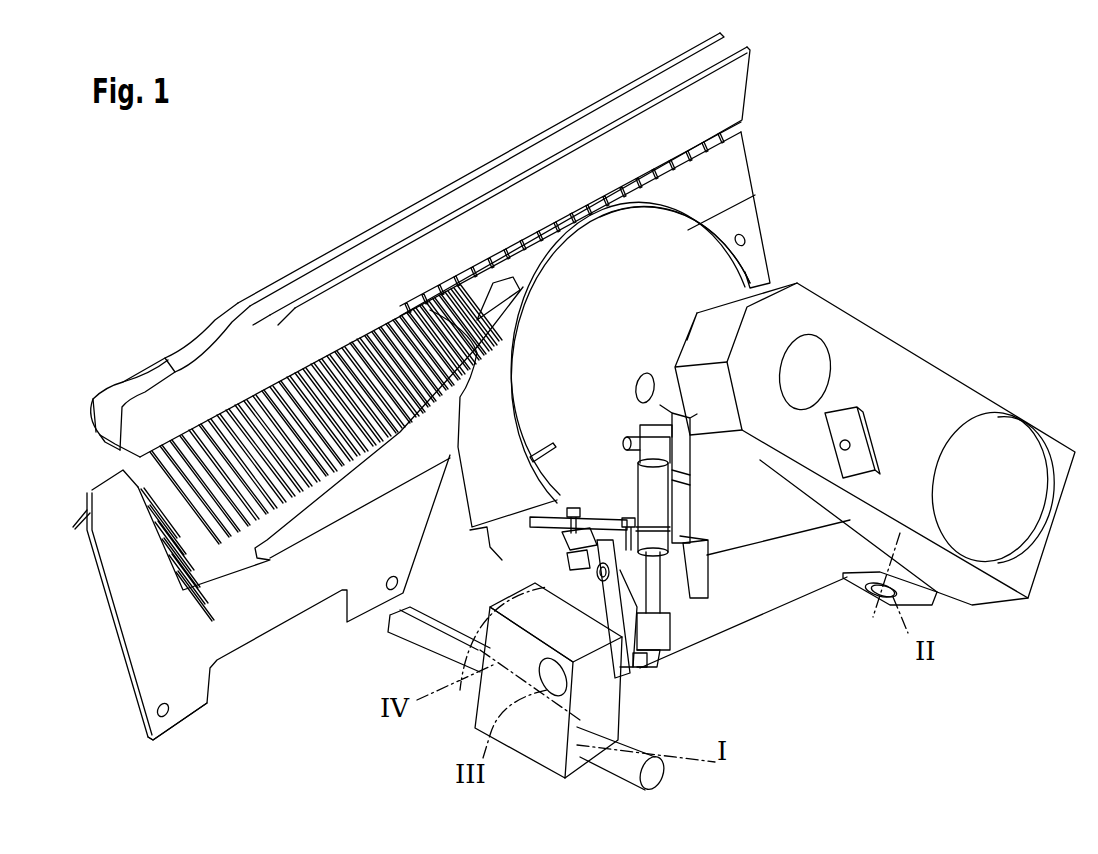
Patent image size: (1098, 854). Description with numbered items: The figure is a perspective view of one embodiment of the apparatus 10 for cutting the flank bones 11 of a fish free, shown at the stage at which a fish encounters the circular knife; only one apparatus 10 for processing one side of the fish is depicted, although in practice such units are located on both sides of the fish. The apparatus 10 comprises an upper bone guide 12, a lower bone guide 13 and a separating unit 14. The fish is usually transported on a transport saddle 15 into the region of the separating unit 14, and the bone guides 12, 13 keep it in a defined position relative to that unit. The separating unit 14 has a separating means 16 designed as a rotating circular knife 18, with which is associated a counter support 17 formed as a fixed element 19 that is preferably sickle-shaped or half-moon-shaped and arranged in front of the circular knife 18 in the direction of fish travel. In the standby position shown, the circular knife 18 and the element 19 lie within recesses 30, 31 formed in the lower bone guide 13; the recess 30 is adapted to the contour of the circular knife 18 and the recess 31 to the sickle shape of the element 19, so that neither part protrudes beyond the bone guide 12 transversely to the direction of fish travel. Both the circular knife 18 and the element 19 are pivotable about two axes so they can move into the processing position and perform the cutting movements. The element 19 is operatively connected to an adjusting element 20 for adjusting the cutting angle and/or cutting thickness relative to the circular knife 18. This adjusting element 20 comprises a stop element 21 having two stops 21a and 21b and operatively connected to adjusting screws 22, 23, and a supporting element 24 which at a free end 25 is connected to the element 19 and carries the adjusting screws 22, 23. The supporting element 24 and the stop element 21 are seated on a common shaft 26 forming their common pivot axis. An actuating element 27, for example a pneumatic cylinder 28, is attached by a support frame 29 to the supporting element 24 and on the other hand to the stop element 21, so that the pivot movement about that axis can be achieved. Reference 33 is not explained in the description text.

The apparatus 10 is at (907, 179).
The flank bones 11 is at (292, 381).
The upper bone guide 12 is at (740, 96).
The lower bone guide 13 is at (732, 175).
The separating unit 14 is at (892, 319).
The transport saddle 15 is at (142, 613).
The separating means 16 is at (715, 273).
The counter support 17 is at (460, 514).
The circular knife 18 is at (624, 322).
The fixed element 19 is at (503, 441).
The adjusting element 20 is at (695, 610).
The stop element 21 is at (597, 590).
The stop 21a is at (580, 560).
The stop 21b is at (657, 650).
The adjusting screw 22 is at (573, 507).
The adjusting screw 23 is at (625, 517).
The supporting element 24 is at (683, 578).
The free end 25 is at (526, 535).
The common shaft 26 is at (602, 583).
The actuating element 27 is at (677, 477).
The pneumatic cylinder 28 is at (655, 493).
The support frame 29 is at (677, 448).
The recess 30 is at (648, 210).
The recess 31 is at (521, 284).
The plate corner 33 is at (178, 702).